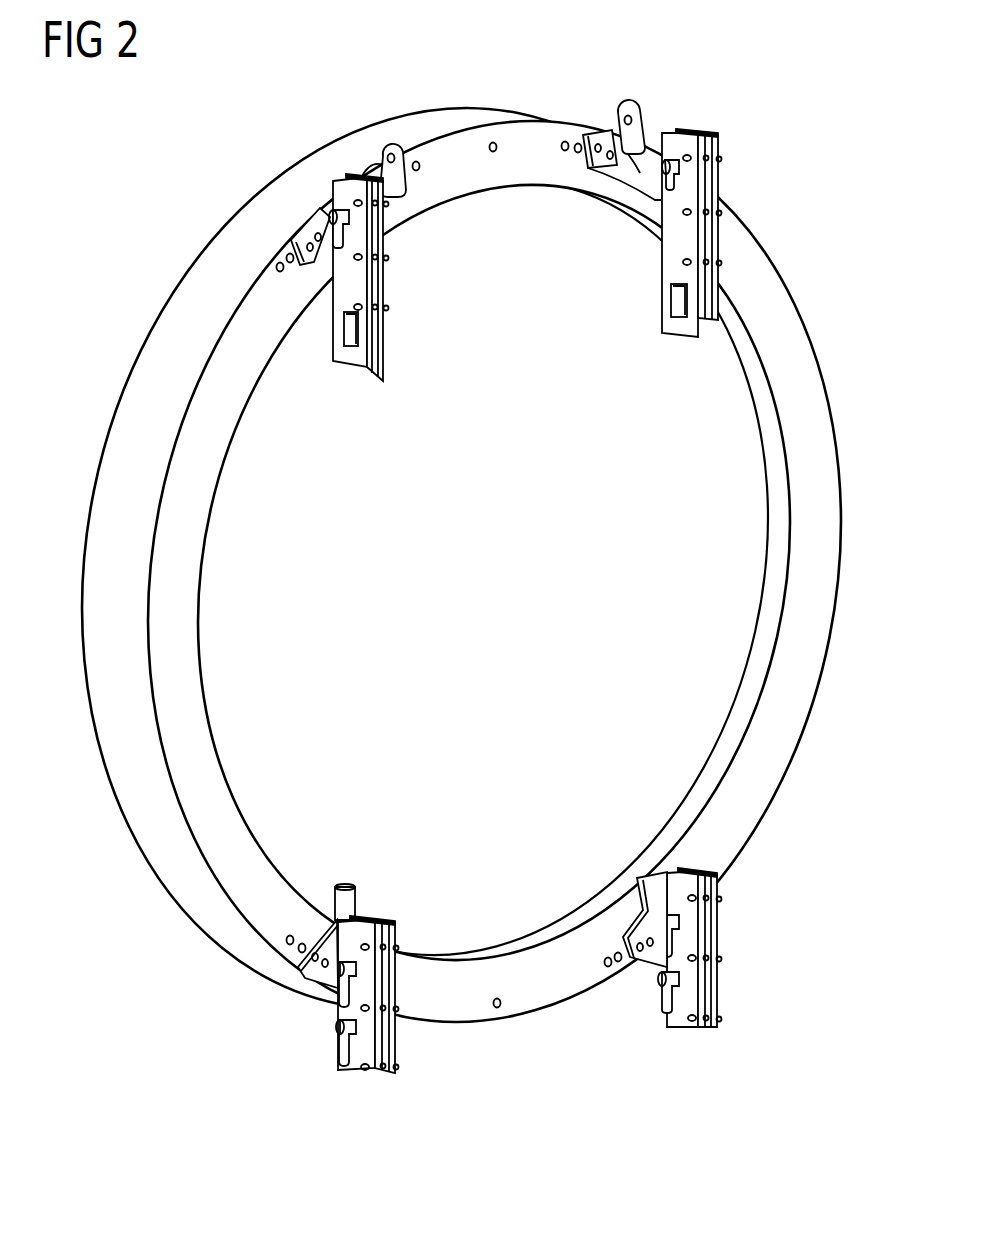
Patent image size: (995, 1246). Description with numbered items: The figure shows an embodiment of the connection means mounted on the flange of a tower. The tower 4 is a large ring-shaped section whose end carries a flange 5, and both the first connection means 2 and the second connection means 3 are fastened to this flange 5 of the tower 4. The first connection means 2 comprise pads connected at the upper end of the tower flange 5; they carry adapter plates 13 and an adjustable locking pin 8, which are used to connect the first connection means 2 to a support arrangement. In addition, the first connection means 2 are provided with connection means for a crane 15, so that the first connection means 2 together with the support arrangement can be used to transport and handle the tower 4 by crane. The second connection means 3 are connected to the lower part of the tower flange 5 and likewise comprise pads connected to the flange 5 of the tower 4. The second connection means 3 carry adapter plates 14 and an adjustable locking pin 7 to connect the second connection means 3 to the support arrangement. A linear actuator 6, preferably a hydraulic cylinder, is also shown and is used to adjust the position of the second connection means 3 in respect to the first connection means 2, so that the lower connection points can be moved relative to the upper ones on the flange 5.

The first connection means 2 is at (302, 233).
The second connection means 3 is at (330, 983).
The tower 4 is at (88, 519).
The flange 5 is at (823, 465).
The linear actuator 6 is at (347, 893).
The adjustable locking pin 7 is at (345, 970).
The adjustable locking pin 8 is at (317, 212).
The adapter plates 13 is at (362, 280).
The adapter plates 14 is at (357, 1057).
The connection means for a crane 15 is at (387, 143).